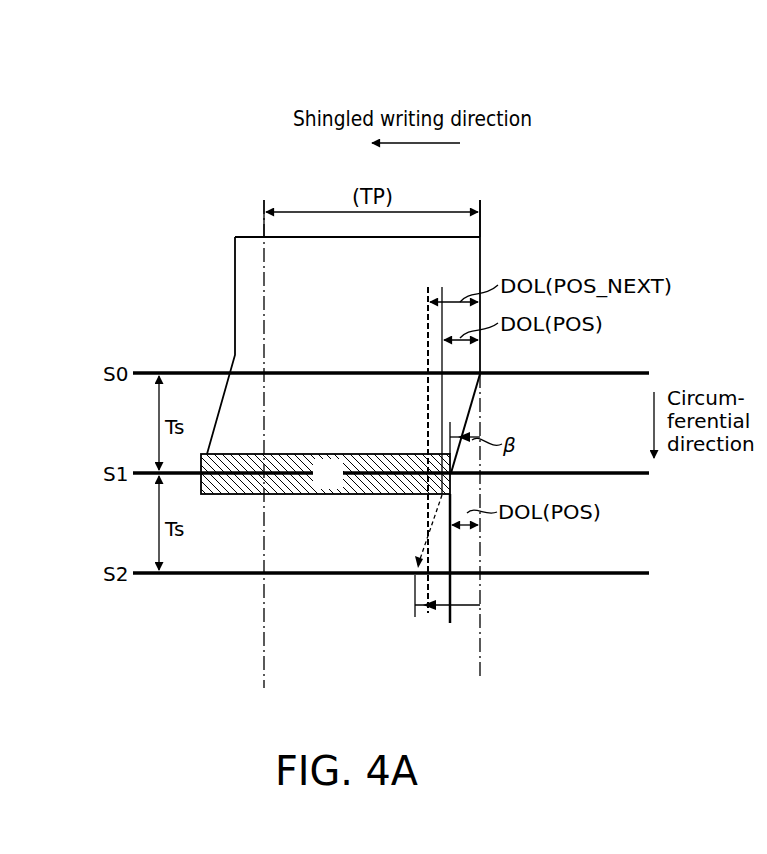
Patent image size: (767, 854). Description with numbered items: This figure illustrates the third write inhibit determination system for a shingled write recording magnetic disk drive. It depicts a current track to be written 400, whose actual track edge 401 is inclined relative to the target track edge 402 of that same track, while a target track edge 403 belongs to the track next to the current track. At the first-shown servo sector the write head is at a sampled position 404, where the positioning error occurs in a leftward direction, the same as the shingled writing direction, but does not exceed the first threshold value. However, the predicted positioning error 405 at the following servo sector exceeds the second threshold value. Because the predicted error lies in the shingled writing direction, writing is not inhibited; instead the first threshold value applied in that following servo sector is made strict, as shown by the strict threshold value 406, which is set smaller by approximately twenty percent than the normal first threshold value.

The current track to be written 400 is at (363, 329).
The track edge 401 is at (475, 410).
The target track edge 402 is at (482, 640).
The target track edge of next track 403 is at (263, 643).
The sampled position 404 is at (323, 494).
The predicted positioning error 405 is at (440, 608).
The strict threshold value DOL(POS) 406 is at (467, 530).